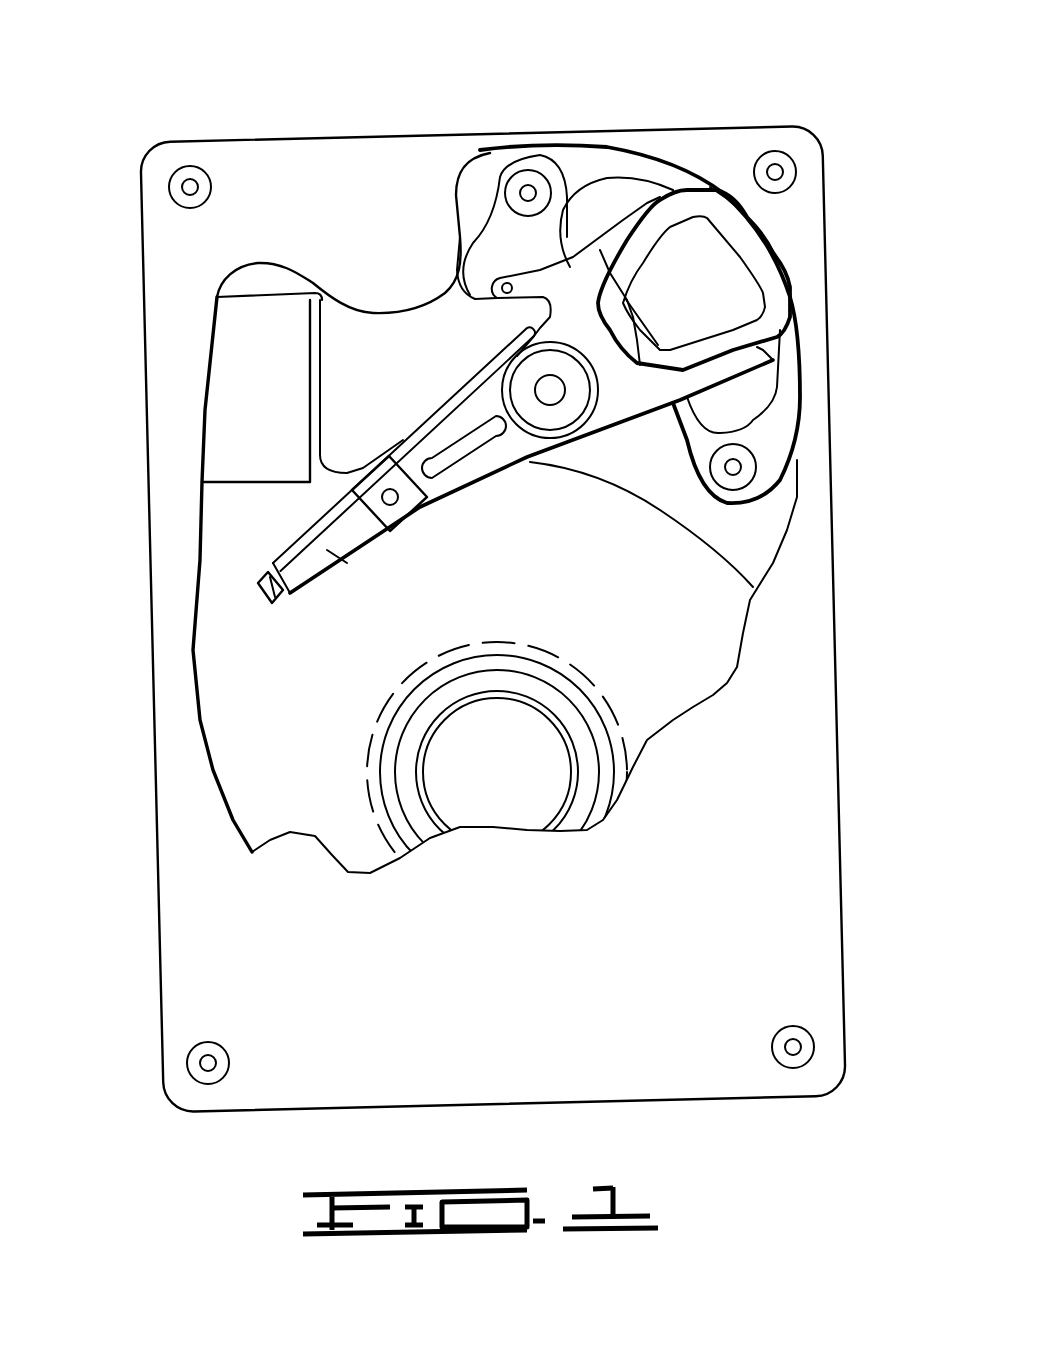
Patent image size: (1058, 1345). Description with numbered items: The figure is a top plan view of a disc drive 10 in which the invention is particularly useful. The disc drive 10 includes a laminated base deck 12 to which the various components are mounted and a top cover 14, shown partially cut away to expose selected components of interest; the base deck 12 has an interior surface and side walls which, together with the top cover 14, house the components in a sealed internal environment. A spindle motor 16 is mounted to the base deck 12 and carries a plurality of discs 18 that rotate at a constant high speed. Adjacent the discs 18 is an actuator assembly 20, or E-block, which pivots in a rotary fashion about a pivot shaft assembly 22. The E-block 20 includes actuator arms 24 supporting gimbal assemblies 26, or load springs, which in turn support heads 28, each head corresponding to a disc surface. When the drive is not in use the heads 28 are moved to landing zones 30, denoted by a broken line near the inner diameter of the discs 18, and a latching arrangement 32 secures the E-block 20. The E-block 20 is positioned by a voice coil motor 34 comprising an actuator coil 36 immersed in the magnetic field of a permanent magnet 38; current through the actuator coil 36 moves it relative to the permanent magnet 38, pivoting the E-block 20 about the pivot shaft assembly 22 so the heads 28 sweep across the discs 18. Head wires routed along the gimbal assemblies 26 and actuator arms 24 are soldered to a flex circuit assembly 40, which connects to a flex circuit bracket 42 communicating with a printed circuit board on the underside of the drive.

The disc drive 10 is at (213, 117).
The laminated base deck 12 is at (227, 543).
The top cover 14 is at (220, 880).
The spindle motor 16 is at (505, 780).
The discs 18 is at (690, 653).
The actuator assembly 20 is at (527, 437).
The pivot shaft assembly 22 is at (553, 393).
The actuator arms 24 is at (413, 483).
The gimbal assemblies 26 is at (343, 567).
The heads 28 is at (262, 603).
The landing zones 30 is at (367, 737).
The latching arrangement 32 is at (497, 283).
The voice coil motor 34 is at (608, 200).
The actuator coil 36 is at (765, 273).
The permanent magnet 38 is at (583, 227).
The flex circuit assembly 40 is at (453, 387).
The flex circuit bracket 42 is at (240, 403).